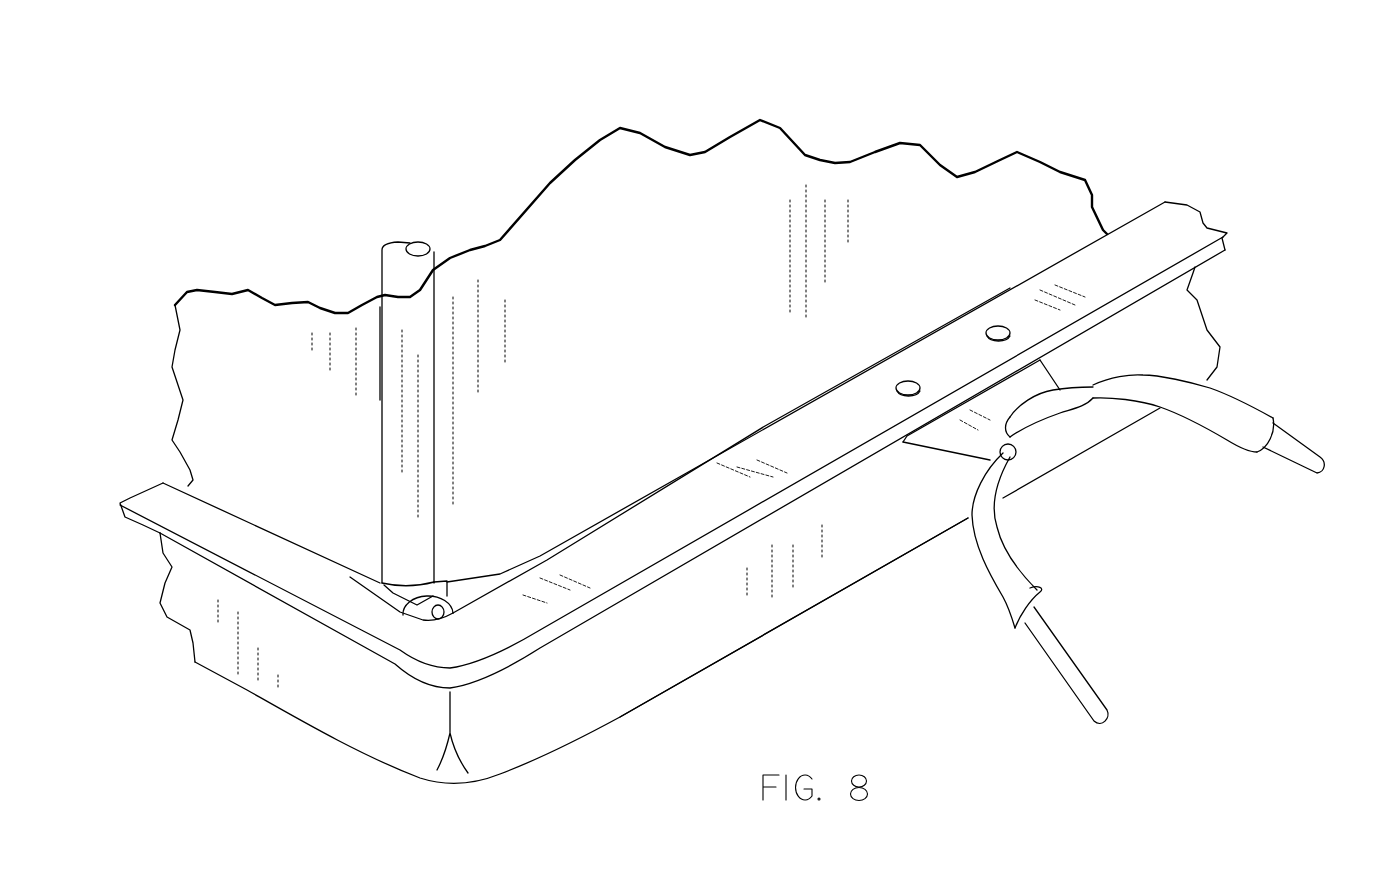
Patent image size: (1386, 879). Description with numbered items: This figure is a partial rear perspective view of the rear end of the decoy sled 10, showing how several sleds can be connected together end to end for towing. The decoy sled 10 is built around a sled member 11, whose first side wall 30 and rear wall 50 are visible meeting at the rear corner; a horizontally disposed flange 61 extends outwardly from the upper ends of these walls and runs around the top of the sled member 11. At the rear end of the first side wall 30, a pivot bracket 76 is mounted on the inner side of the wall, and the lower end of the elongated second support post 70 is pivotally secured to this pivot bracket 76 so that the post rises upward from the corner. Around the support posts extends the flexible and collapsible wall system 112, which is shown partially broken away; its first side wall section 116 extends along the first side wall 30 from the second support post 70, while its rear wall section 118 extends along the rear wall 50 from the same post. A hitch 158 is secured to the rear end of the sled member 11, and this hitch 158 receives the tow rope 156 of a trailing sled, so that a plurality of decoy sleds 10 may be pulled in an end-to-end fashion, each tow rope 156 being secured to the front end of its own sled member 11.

The decoy sled 10 is at (1078, 150).
The sled member 11 is at (702, 674).
The first side wall 30 is at (355, 701).
The rear wall 50 is at (762, 605).
The horizontally disposed flange 61 is at (680, 500).
The second support post 70 is at (429, 240).
The pivot bracket 76 is at (447, 582).
The wall system 112 is at (806, 177).
The first side wall section 116 is at (291, 432).
The rear wall section 118 is at (691, 293).
The tow rope 156 is at (1245, 398).
The hitch 158 is at (1045, 372).